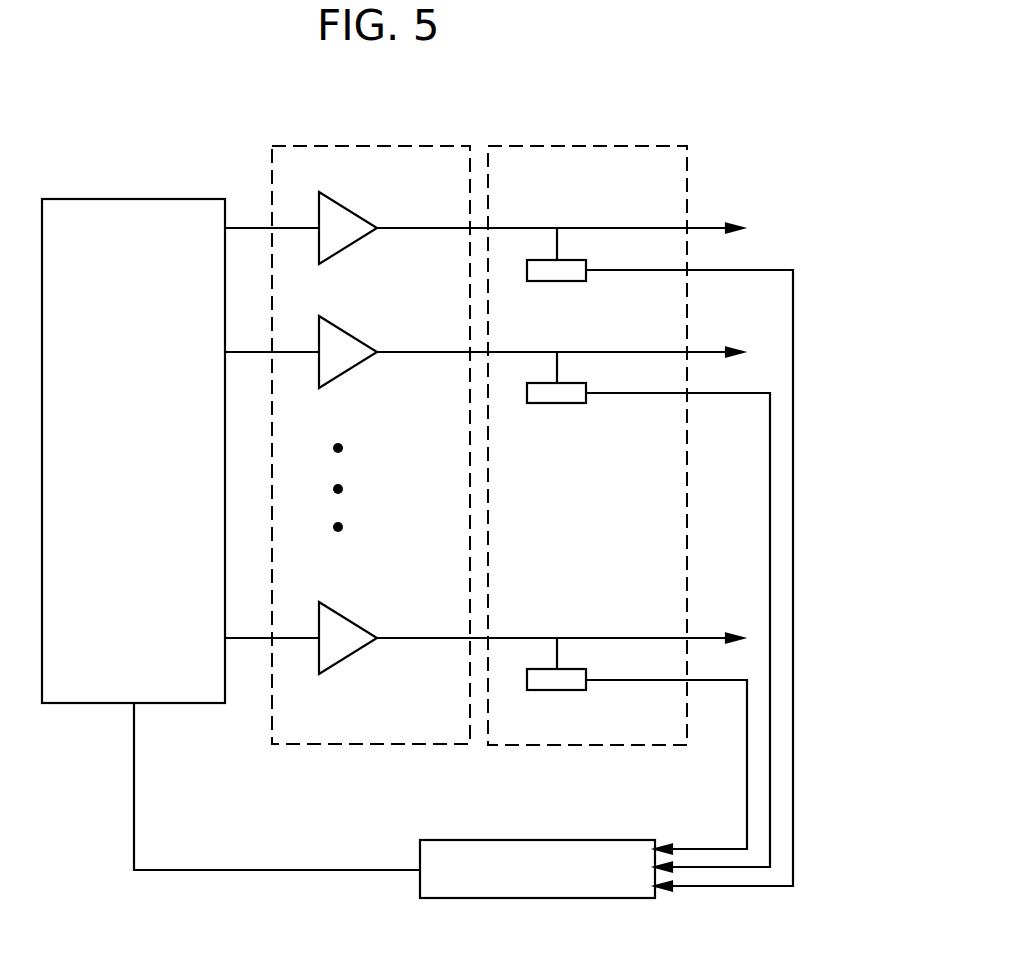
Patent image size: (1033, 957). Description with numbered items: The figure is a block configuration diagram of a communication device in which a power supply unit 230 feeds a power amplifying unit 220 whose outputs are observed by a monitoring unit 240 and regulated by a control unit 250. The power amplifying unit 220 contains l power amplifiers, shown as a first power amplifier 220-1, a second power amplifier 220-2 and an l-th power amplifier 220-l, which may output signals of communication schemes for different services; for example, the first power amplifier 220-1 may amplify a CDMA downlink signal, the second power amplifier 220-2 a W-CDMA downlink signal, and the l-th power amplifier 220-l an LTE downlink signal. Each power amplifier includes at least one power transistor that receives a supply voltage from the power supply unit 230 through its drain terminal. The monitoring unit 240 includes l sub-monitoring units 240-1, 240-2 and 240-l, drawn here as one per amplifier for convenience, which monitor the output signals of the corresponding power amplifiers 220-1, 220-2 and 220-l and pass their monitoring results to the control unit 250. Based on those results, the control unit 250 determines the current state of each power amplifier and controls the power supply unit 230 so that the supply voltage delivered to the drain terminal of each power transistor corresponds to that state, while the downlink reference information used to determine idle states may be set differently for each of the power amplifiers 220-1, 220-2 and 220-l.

The power supply unit 230 is at (136, 199).
The power amplifying unit 220 is at (432, 146).
The monitoring unit 240 is at (605, 146).
The first power amplifier 220-1 is at (356, 212).
The second power amplifier 220-2 is at (356, 336).
The l-th power amplifier 220-l is at (356, 622).
The first sub-monitoring unit 240-1 is at (563, 281).
The second sub-monitoring unit 240-2 is at (565, 403).
The l-th sub-monitoring unit 240-l is at (565, 690).
The control unit 250 is at (624, 840).